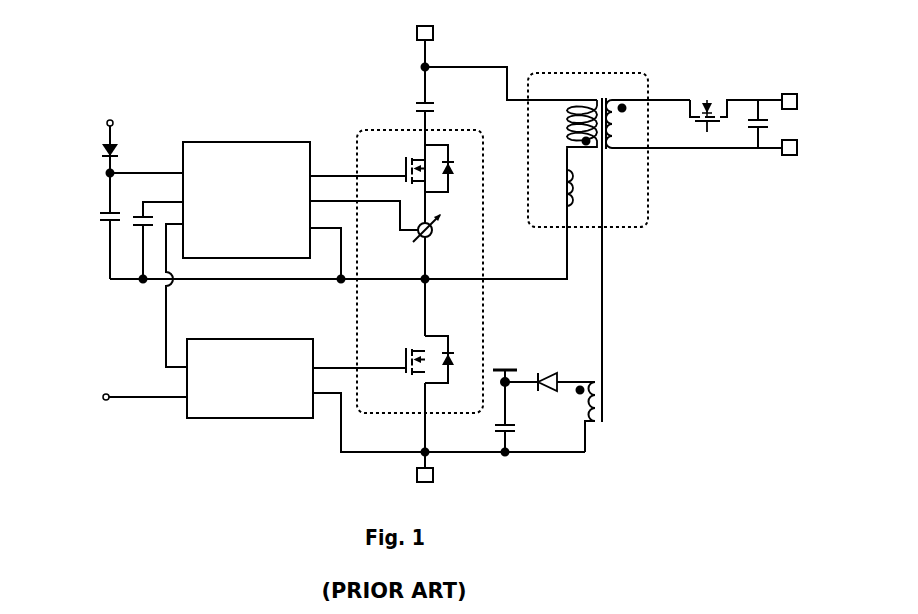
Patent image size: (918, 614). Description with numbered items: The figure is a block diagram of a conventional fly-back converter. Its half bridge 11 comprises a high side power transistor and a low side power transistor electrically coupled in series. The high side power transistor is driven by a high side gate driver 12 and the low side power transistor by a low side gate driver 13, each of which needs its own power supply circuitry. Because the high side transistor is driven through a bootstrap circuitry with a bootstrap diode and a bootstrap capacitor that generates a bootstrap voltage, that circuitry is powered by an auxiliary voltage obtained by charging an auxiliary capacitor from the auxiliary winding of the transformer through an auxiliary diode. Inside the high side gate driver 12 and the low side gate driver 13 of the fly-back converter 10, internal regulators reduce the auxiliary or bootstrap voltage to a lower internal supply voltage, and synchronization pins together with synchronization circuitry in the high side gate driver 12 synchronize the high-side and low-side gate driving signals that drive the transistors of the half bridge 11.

The conventional fly-back converter 10 is at (102, 27).
The half bridge 11 is at (380, 131).
The high side gate driver 12 is at (257, 142).
The low side gate driver 13 is at (262, 339).